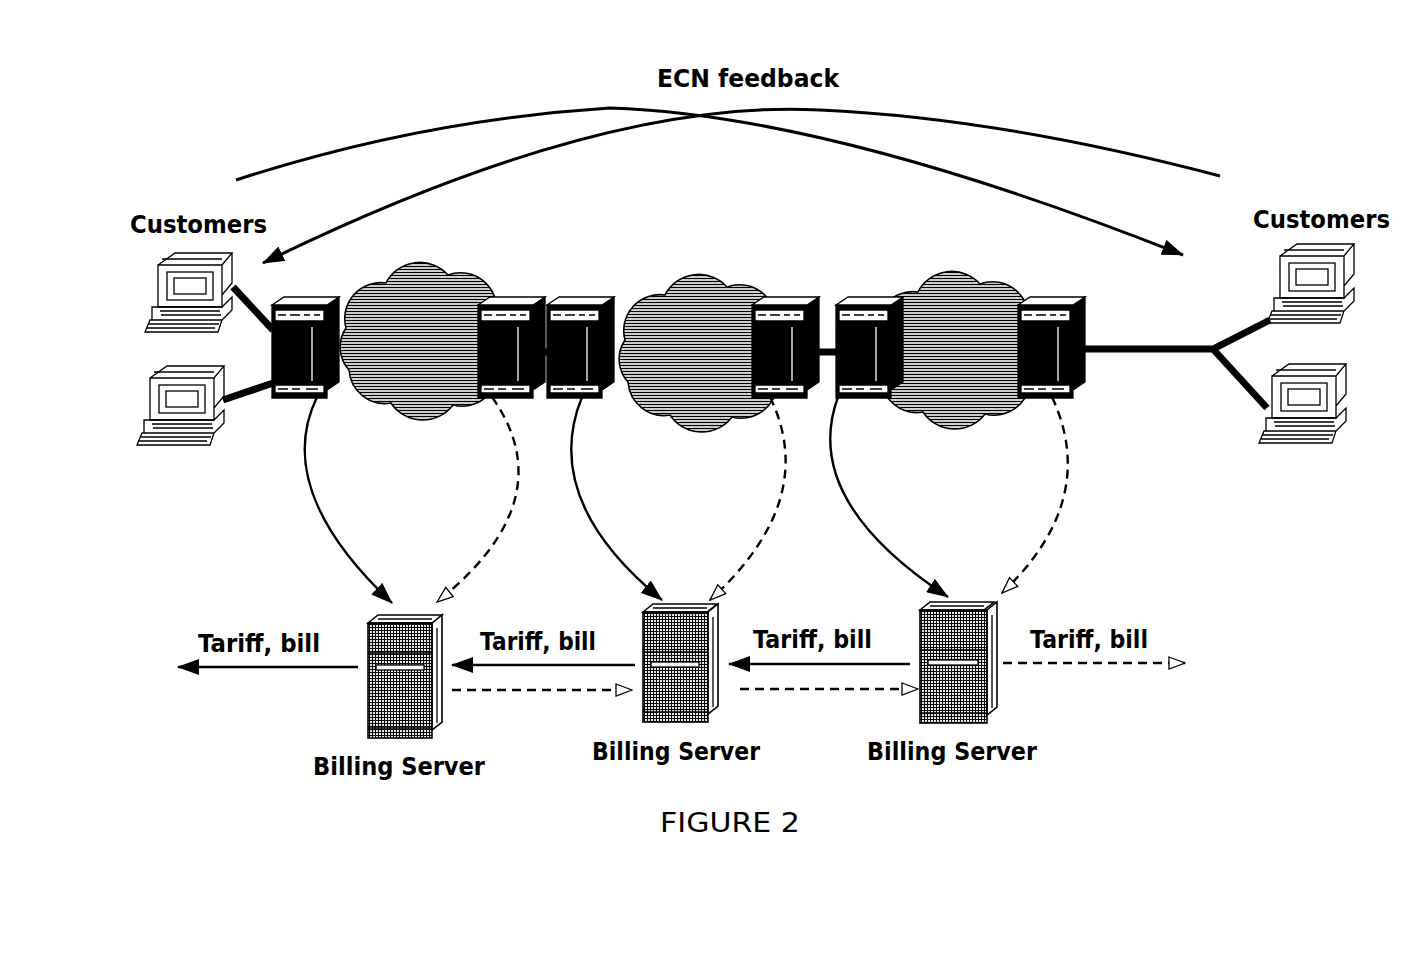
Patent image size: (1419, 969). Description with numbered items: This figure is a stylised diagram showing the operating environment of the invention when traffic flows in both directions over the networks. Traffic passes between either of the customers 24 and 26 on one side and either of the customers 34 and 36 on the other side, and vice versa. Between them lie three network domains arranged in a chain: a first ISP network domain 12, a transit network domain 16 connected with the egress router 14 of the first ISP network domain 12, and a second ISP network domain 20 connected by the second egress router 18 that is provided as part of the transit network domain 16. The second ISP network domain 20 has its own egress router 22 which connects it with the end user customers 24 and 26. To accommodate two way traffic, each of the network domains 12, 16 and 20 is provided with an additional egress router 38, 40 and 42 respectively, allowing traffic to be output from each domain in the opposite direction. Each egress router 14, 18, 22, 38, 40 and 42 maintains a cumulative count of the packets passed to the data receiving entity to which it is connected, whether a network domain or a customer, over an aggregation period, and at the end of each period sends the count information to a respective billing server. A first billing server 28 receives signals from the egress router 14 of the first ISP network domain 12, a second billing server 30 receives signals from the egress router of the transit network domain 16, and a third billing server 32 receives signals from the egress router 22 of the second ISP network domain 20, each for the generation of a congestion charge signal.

The first ISP network domain 12 is at (944, 430).
The egress router 14 is at (862, 300).
The transit network domain 16 is at (697, 430).
The second egress router 18 is at (584, 300).
The second ISP network domain 20 is at (410, 424).
The egress router 22 is at (298, 300).
The end user customer 24 is at (158, 280).
The end user customer 26 is at (150, 404).
The first billing server 28 is at (966, 603).
The second billing server 30 is at (682, 605).
The third billing server 32 is at (367, 695).
The customer 34 is at (1358, 283).
The customer 36 is at (1296, 445).
The additional egress router 38 is at (1048, 300).
The additional egress router 40 is at (775, 300).
The additional egress router 42 is at (507, 300).